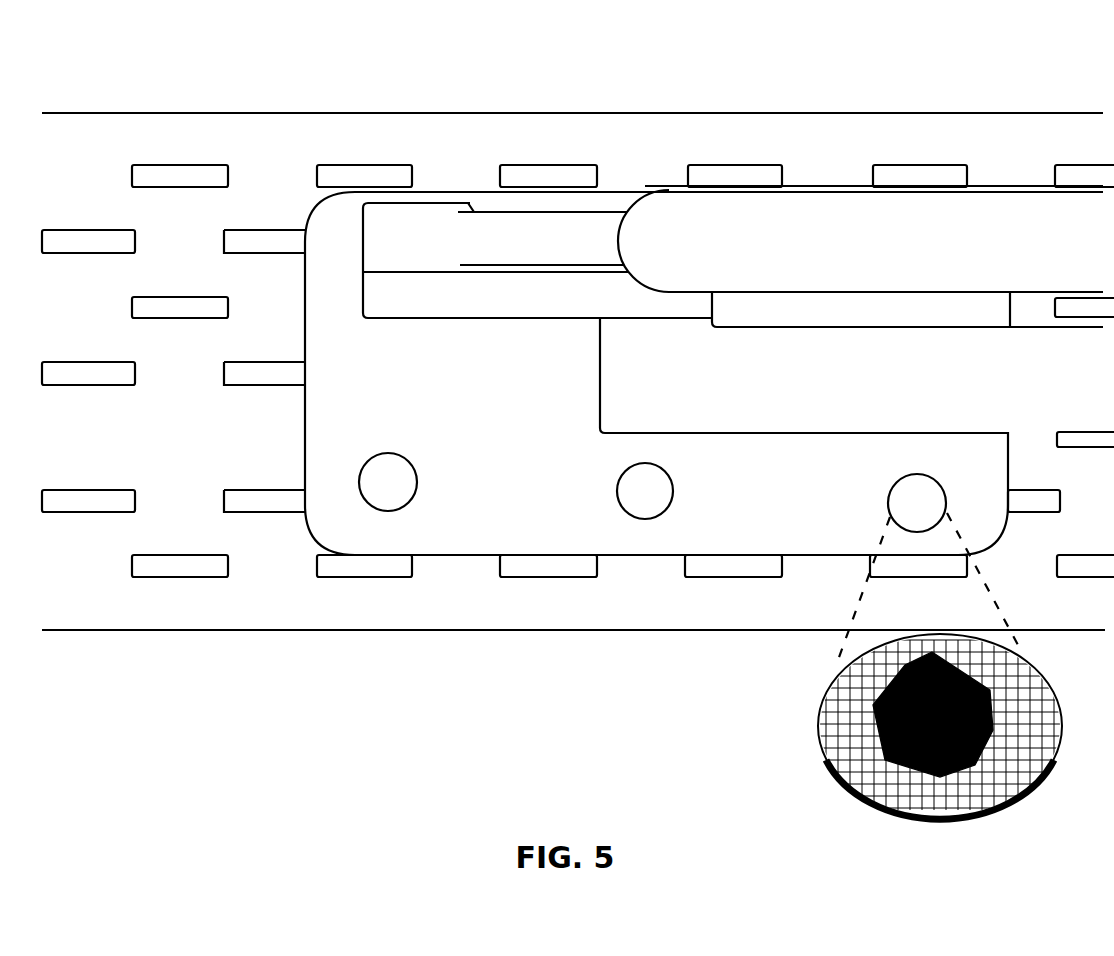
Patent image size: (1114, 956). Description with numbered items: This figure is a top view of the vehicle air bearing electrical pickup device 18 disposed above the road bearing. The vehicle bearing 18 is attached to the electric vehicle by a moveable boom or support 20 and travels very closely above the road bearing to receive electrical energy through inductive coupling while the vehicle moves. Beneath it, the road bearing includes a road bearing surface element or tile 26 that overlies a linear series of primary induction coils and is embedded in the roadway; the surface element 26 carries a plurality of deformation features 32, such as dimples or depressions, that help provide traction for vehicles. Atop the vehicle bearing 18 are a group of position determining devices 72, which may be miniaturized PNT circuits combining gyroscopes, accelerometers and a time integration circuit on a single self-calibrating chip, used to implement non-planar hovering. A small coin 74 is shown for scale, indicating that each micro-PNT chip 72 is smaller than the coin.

The vehicle air bearing electrical pickup device 18 is at (433, 527).
The moveable boom 20 is at (798, 380).
The road bearing surface element 26 is at (97, 590).
The deformation features 32 is at (168, 576).
The position determining devices 72 is at (917, 505).
The small coin 74 is at (853, 755).